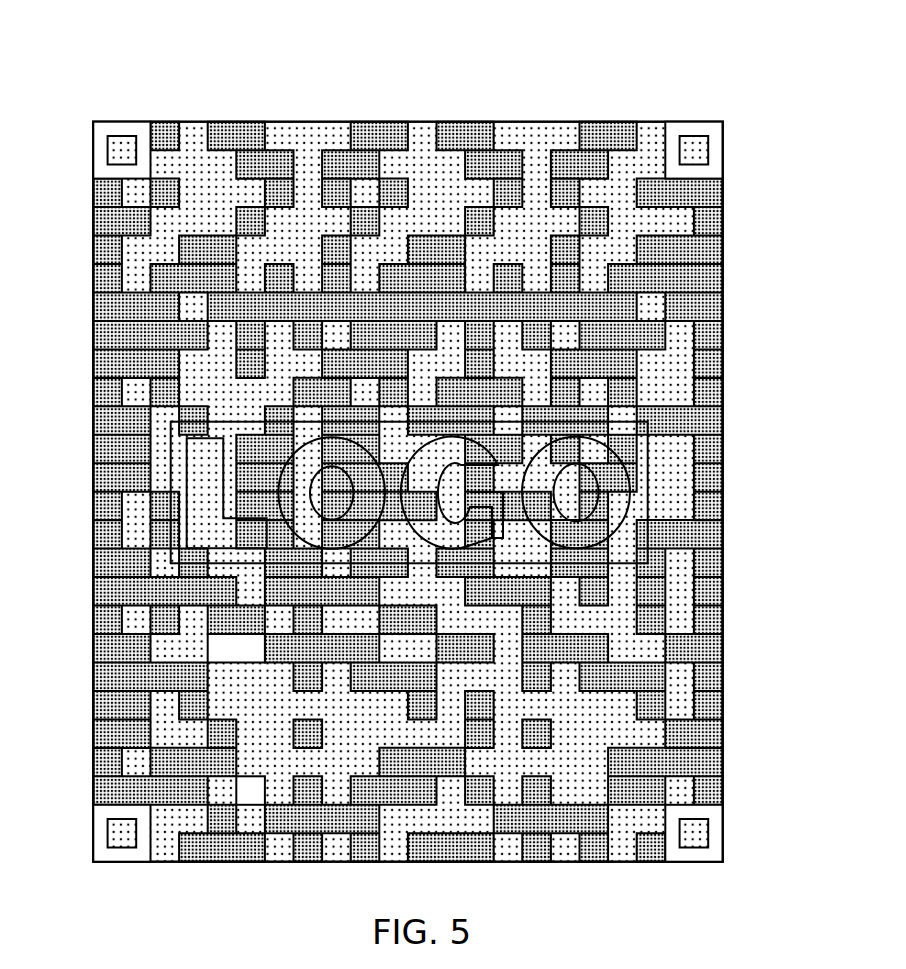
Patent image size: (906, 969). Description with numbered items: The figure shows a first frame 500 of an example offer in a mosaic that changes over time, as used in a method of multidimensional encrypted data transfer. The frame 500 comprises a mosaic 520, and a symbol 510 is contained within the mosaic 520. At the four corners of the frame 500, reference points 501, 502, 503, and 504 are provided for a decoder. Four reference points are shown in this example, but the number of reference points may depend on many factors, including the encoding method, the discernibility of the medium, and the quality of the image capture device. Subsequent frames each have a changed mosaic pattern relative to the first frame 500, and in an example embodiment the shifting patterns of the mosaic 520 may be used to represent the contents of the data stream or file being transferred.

The first frame 500 is at (608, 64).
The reference point 501 is at (93, 143).
The reference point 502 is at (723, 143).
The reference point 503 is at (723, 843).
The reference point 504 is at (93, 843).
The symbol 510 is at (276, 459).
The mosaic 520 is at (476, 839).